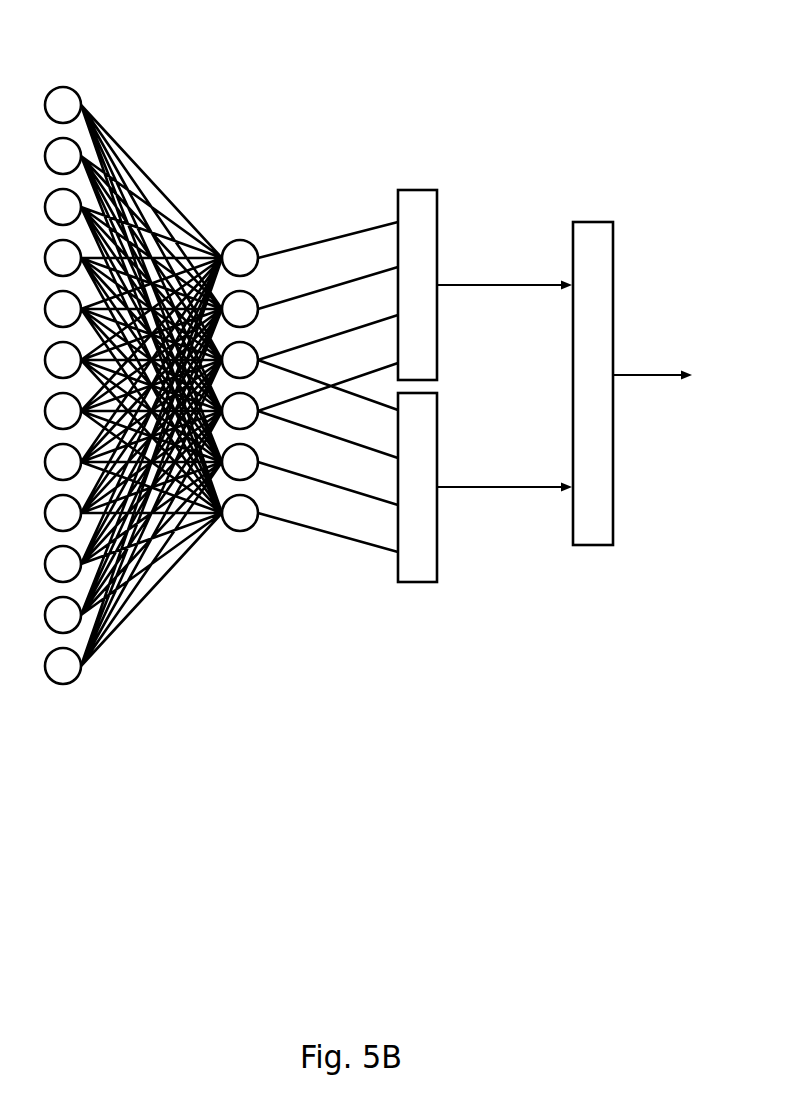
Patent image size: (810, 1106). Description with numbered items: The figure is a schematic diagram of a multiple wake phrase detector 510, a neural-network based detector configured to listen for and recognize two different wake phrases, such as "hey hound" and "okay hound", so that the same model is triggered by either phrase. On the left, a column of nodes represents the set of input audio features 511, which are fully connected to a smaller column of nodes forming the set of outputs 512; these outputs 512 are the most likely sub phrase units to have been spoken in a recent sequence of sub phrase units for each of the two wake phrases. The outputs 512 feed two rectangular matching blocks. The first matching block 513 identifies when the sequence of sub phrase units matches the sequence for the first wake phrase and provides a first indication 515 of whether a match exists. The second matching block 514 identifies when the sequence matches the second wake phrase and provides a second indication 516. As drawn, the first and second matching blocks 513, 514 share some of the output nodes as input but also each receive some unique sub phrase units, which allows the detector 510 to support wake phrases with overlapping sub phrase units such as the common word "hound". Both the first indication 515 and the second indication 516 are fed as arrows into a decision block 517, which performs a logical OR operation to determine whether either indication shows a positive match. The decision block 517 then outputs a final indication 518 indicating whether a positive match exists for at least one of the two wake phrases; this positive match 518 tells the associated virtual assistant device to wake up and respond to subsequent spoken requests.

The multiple wake phrase detector 510 is at (322, 742).
The input audio features 511 is at (57, 78).
The outputs 512 is at (275, 200).
The first matching block 513 is at (437, 223).
The second matching block 514 is at (437, 435).
The first indication 515 is at (457, 285).
The second indication 516 is at (472, 487).
The decision block 517 is at (593, 221).
The final indication 518 is at (634, 370).